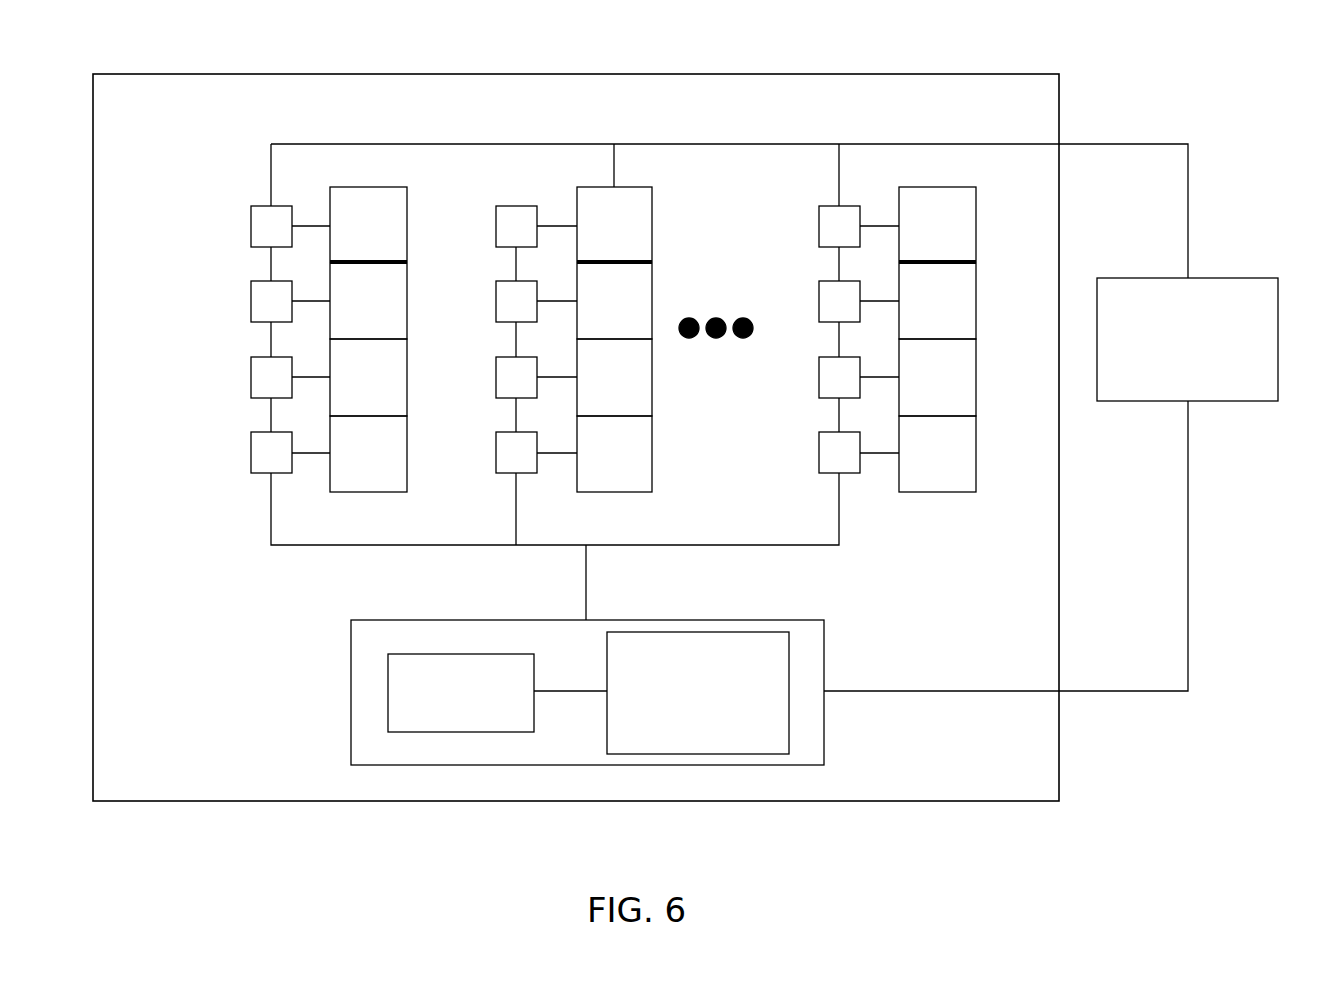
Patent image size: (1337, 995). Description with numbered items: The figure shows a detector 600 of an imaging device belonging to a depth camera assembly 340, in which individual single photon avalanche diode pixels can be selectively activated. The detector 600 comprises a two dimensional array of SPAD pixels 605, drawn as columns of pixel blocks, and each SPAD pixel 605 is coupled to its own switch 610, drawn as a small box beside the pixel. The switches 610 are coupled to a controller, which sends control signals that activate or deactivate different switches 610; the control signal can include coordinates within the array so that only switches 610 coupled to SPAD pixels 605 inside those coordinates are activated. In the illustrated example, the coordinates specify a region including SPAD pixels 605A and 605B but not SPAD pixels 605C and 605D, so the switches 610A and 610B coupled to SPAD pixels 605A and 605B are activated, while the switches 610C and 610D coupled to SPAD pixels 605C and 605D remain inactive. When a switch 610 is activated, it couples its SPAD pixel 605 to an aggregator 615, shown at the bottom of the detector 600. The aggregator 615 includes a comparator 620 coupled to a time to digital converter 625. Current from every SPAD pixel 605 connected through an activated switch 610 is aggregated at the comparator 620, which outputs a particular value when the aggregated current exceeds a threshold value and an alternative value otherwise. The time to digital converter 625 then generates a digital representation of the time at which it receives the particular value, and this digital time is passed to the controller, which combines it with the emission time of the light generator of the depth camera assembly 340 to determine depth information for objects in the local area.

The detector 600 is at (577, 73).
The SPAD pixel 605A is at (368, 224).
The SPAD pixel 605B is at (368, 301).
The SPAD pixel 605C is at (368, 377).
The SPAD pixel 605D is at (368, 454).
The SPAD pixel 605 is at (776, 339).
The switch 610A is at (250, 225).
The switch 610B is at (250, 300).
The switch 610C is at (250, 376).
The switch 610D is at (250, 451).
The switch 610 is at (495, 230).
The aggregator 615 is at (351, 617).
The comparator 620 is at (461, 693).
The time to digital converter 625 is at (698, 693).
The depth camera assembly 340 is at (1187, 339).